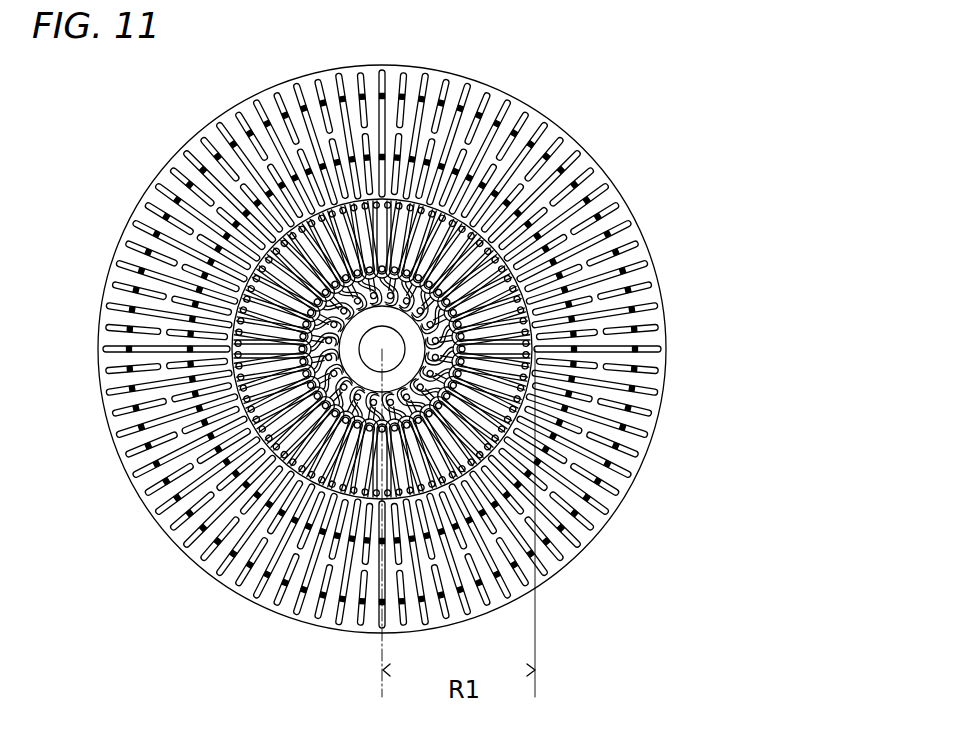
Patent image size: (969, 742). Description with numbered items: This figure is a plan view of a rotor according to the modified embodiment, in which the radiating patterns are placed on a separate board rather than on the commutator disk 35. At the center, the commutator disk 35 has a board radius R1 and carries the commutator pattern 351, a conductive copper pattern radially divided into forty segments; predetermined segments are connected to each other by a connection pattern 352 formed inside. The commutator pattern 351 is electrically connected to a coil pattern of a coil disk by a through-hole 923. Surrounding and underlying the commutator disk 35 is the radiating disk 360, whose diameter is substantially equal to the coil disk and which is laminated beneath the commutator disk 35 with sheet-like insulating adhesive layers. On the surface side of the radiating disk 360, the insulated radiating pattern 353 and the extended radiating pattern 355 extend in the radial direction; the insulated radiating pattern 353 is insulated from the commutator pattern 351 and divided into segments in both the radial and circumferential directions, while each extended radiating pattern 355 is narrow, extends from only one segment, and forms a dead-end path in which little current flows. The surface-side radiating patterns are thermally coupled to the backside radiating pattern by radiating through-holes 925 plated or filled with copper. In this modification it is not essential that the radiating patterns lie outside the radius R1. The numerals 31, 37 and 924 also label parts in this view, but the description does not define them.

The inner plate portion 31 is at (335, 374).
The commutator disk 35 is at (402, 348).
The hub 37 is at (400, 320).
The commutator pattern 351 is at (490, 272).
The connection pattern 352 is at (535, 326).
The insulated radiating pattern 353 is at (597, 366).
The extended radiating pattern 355 is at (620, 348).
The radiating disk 360 is at (577, 557).
The through-hole 923 is at (622, 490).
The inner channel 924 is at (405, 212).
The radiating through-hole 925 is at (255, 468).